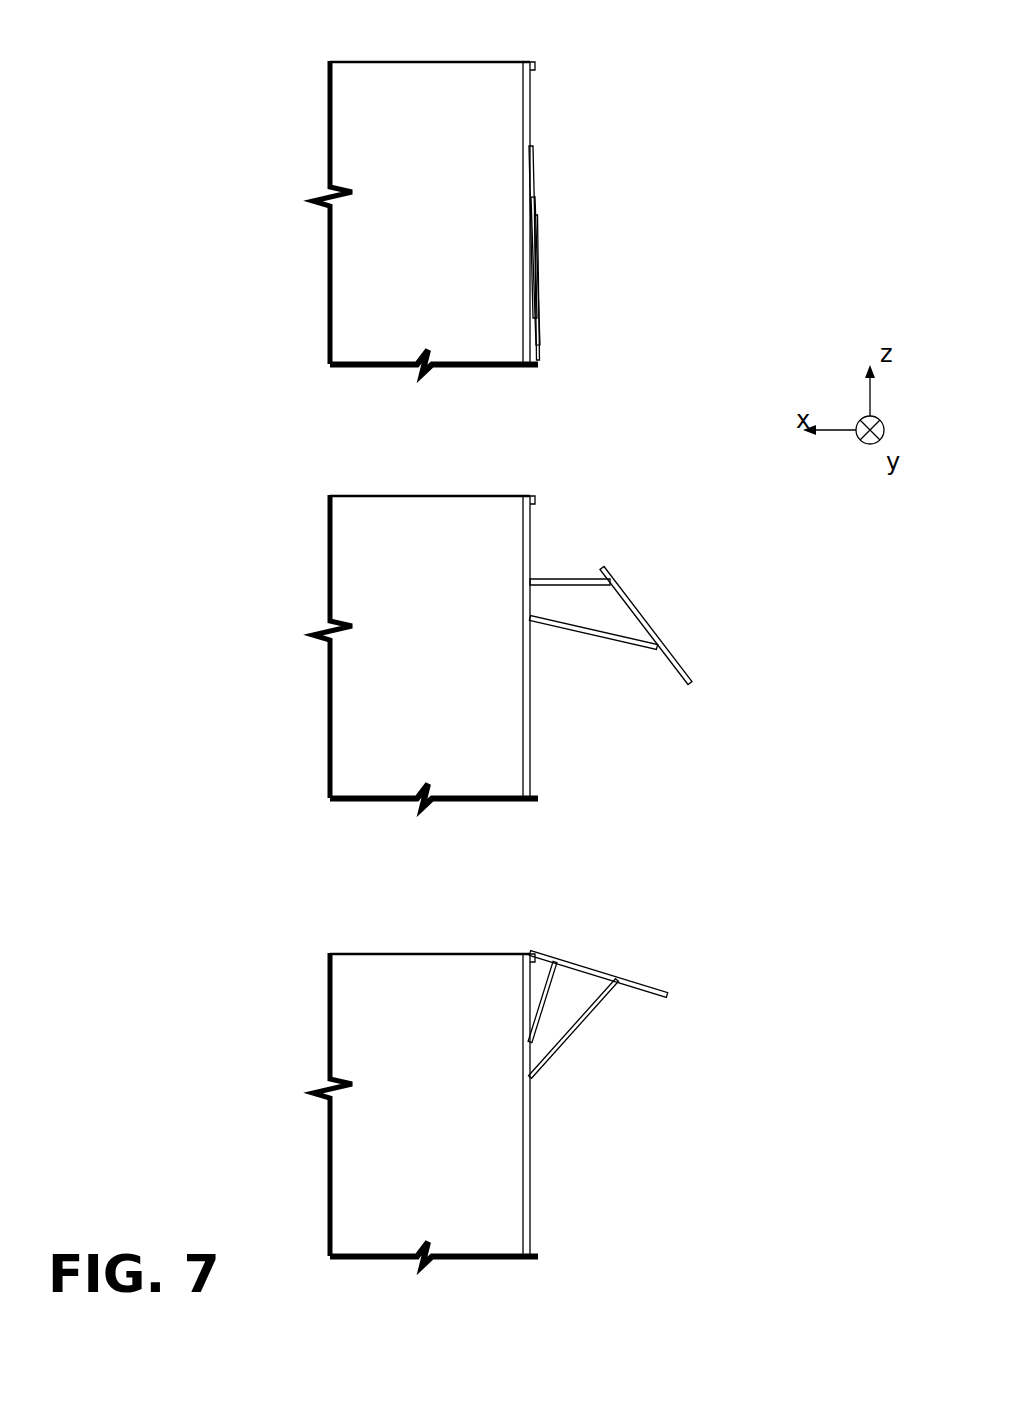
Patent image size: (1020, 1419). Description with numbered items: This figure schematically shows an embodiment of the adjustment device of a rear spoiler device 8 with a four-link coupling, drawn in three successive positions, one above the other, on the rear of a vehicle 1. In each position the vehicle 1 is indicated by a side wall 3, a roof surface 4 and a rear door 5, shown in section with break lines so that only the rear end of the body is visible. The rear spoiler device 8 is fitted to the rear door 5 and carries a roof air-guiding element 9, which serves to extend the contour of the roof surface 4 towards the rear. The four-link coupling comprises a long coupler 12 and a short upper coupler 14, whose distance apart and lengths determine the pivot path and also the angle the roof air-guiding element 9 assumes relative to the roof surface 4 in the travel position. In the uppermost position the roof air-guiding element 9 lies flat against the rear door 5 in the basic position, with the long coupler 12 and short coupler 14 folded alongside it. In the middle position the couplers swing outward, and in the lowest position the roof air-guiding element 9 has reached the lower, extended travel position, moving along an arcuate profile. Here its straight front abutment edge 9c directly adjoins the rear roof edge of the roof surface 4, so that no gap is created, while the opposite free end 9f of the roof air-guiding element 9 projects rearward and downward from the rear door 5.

The vehicle 1 is at (303, 658).
The side wall 3 is at (421, 814).
The roof surface 4 is at (430, 479).
The rear door 5 is at (528, 100).
The rear spoiler device 8 is at (622, 208).
The roof air-guiding element 9 is at (541, 333).
The front abutment edge 9c is at (535, 955).
The free end of support plate 9f is at (667, 996).
The long coupler 12 is at (538, 262).
The short coupler 14 is at (537, 178).